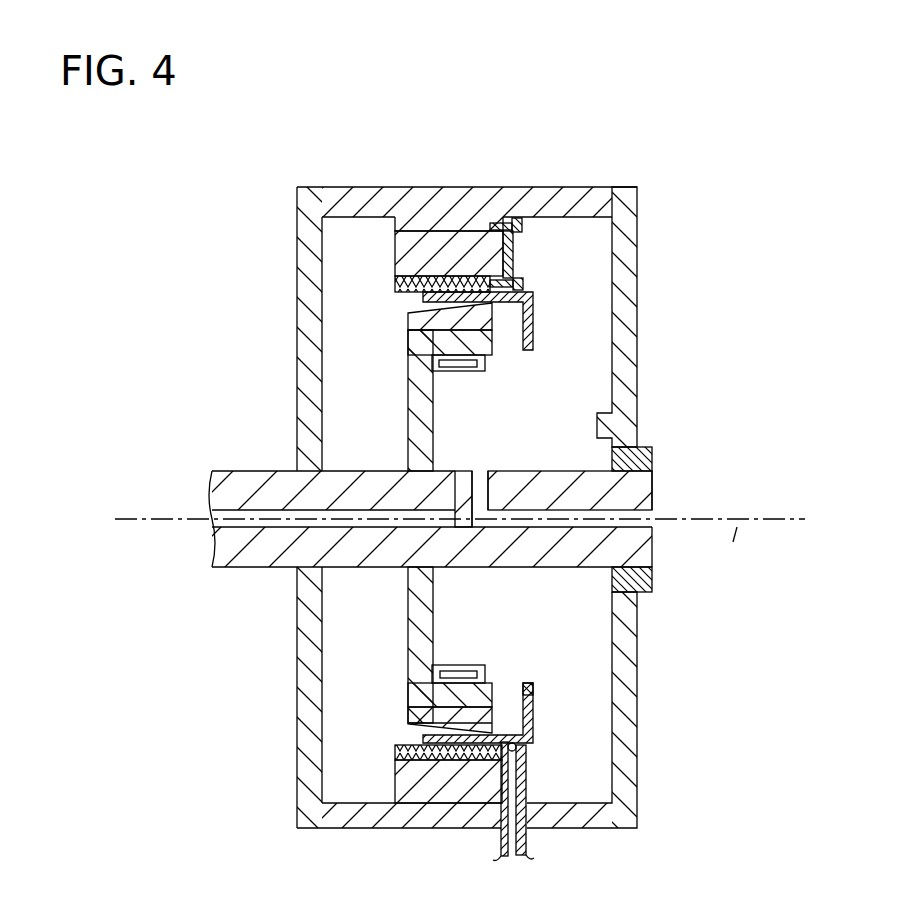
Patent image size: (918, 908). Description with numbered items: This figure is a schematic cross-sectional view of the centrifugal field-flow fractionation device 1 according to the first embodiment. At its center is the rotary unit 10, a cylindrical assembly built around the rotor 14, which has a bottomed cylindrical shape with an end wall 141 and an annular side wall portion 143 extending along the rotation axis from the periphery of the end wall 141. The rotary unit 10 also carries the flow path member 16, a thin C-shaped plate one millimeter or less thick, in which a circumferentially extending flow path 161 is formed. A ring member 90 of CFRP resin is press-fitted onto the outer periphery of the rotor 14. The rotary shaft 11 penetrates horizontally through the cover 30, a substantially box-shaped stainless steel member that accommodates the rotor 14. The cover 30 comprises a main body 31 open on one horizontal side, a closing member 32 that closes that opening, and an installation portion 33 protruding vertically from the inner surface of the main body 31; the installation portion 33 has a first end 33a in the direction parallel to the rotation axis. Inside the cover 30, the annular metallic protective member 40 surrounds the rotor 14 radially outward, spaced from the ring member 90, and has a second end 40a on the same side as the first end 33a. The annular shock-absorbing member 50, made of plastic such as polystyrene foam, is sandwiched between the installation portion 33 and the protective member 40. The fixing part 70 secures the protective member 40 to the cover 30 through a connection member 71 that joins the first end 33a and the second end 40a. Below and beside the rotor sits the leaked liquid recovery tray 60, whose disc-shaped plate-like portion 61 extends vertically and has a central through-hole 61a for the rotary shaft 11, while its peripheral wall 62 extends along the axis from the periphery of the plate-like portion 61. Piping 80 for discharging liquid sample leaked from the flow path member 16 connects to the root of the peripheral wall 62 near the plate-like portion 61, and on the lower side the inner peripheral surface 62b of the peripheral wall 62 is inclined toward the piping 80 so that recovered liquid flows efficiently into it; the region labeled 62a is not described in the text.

The centrifugal field-flow fractionation device 1 is at (784, 152).
The rotary unit 10 is at (376, 695).
The rotary shaft 11 is at (245, 568).
The rotor 14 is at (383, 609).
The flow path member 16 is at (480, 368).
The cover 30 is at (387, 141).
The main body 31 is at (366, 186).
The closing member 32 is at (311, 186).
The installation portion 33 is at (450, 226).
The first end 33a is at (505, 220).
The protective member 40 is at (398, 286).
The second end 40a is at (500, 289).
The shock-absorbing member 50 is at (400, 261).
The leaked liquid recovery tray 60 is at (553, 706).
The plate-like portion 61 is at (534, 717).
The through-hole 61a is at (531, 683).
The peripheral wall 62 is at (440, 768).
The base board 62a is at (516, 749).
The inner peripheral surface 62b is at (500, 750).
The fixing part 70 is at (558, 241).
The connection member 71 is at (514, 261).
The piping 80 is at (528, 849).
The ring member 90 is at (409, 716).
The end wall 141 is at (433, 645).
The side wall portion 143 is at (450, 342).
The flow path 161 is at (452, 368).